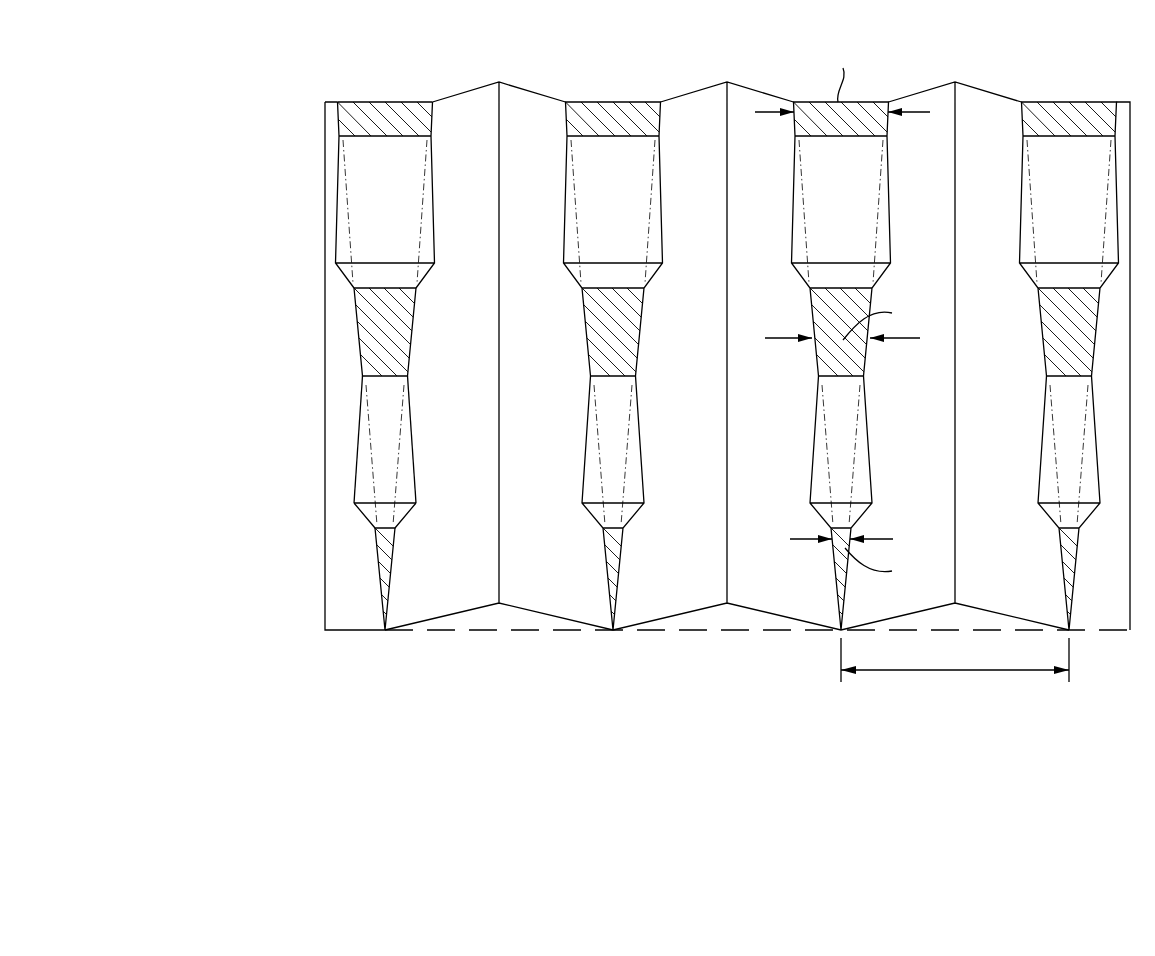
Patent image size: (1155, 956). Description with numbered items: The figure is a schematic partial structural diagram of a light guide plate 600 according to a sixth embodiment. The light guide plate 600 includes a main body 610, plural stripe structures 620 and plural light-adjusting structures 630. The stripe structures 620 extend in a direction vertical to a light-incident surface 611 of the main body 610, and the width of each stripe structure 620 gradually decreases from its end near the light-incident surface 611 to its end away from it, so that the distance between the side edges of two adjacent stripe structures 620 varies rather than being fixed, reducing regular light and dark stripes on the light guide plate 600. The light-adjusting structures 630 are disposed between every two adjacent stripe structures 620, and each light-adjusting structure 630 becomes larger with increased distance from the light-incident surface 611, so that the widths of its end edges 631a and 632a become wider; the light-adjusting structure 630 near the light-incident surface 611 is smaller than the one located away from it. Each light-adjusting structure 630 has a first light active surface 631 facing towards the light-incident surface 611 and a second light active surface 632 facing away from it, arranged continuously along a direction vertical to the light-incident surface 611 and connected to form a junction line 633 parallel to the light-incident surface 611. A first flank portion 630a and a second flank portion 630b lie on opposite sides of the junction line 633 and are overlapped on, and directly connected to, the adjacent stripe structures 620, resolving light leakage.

The light guide plate 600 is at (231, 75).
The main body 610 is at (325, 194).
The light-incident surface 611 is at (753, 632).
The stripe structure 620 is at (662, 590).
The light-adjusting structure 630 is at (321, 430).
The first flank portion 630a is at (345, 487).
The second flank portion 630b is at (420, 496).
The first light active surface 631 is at (328, 611).
The end edge 631a is at (377, 542).
The second light active surface 632 is at (321, 567).
The end edge 632a is at (365, 352).
The junction line 633 is at (360, 505).